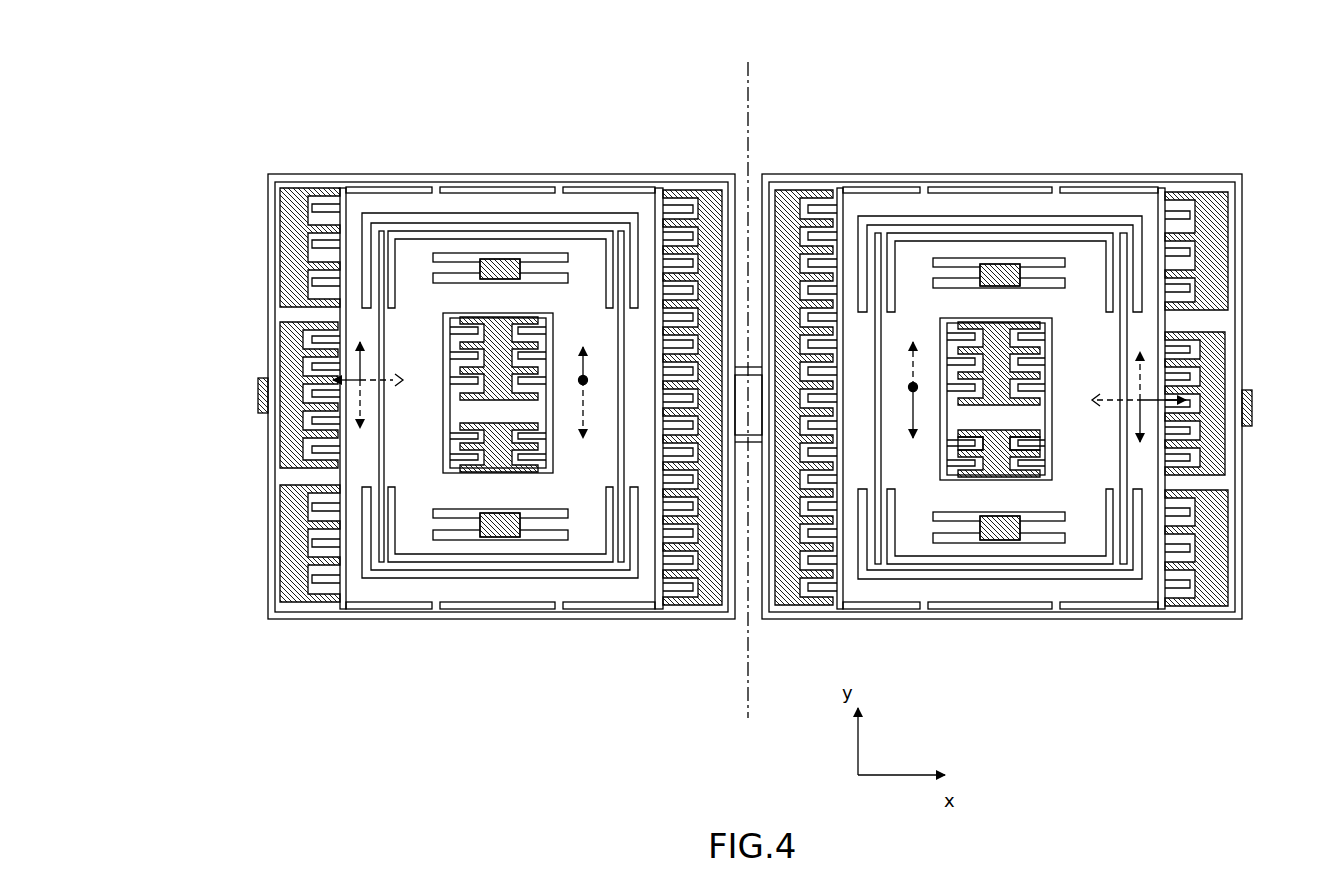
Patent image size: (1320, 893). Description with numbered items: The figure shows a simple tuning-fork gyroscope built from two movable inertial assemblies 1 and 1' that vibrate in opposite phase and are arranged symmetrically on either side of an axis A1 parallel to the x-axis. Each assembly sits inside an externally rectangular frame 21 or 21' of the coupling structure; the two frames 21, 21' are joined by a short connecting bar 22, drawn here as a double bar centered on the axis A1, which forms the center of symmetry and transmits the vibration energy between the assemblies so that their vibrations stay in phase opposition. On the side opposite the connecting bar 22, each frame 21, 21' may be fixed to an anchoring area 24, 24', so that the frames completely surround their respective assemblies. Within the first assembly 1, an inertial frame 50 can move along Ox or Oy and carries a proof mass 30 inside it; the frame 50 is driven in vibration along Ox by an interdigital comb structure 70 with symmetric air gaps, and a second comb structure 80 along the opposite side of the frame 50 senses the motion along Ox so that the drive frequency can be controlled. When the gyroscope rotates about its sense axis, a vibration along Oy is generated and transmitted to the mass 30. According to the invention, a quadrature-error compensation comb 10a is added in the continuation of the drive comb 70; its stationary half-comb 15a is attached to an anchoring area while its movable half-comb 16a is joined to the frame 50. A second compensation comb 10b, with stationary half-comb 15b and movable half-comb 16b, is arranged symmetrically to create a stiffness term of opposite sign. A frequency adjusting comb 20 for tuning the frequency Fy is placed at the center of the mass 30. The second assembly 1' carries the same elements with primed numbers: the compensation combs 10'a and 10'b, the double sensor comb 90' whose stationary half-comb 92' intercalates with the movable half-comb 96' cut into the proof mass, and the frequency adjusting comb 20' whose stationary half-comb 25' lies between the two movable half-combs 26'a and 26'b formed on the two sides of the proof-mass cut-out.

The movable inertial assembly 1 is at (479, 387).
The movable inertial assembly 1' is at (1032, 384).
The symmetry axis A1 is at (745, 378).
The quadrature-error compensation comb 10a is at (370, 114).
The quadrature-error compensation comb 10b is at (370, 664).
The stationary half-comb 15a is at (306, 187).
The movable half-comb 16a is at (331, 204).
The stationary half-comb 15b is at (303, 604).
The movable half-comb 16b is at (328, 587).
The inertial frame 50 is at (435, 213).
The proof mass 30 is at (588, 262).
The external frame 21 is at (521, 370).
The interdigital comb structure 70 is at (310, 323).
The anchoring area 24 is at (237, 414).
The connecting bar 22 is at (738, 366).
The frequency adjusting comb 20 is at (498, 513).
The interdigital comb structure 80 is at (690, 600).
The external frame 21' is at (988, 370).
The sensor comb 90' is at (1122, 260).
The movable half-comb 96' is at (1018, 252).
The stationary half-comb 92' is at (1016, 273).
The quadrature-error compensation comb 10'a is at (1213, 194).
The quadrature-error compensation comb 10'b is at (1194, 599).
The anchoring area 24' is at (1272, 423).
The movable half-comb 26'a is at (947, 553).
The stationary half-comb 25' is at (999, 549).
The movable half-comb 26'b is at (1047, 553).
The frequency adjusting comb 20' is at (1002, 411).